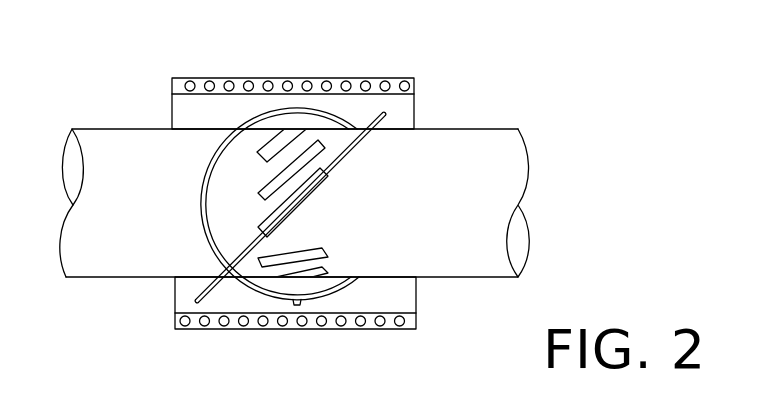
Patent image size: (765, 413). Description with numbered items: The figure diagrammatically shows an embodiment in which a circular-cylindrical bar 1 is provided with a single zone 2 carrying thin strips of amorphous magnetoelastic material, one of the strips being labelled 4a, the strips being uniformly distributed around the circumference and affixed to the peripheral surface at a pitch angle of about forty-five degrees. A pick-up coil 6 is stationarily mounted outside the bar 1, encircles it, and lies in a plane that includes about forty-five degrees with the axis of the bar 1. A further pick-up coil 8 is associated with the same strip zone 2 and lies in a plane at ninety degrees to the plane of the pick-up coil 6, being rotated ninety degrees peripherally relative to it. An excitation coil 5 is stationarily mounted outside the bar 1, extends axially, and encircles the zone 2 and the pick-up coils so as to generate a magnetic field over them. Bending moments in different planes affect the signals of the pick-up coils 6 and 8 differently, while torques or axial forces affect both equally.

The circular-cylindrical bar 1 is at (512, 170).
The zone 2 is at (293, 129).
The blade 4a is at (328, 178).
The excitation coil 5 is at (405, 78).
The pick-up coil 6 is at (384, 114).
The further pick-up coil 8 is at (234, 127).